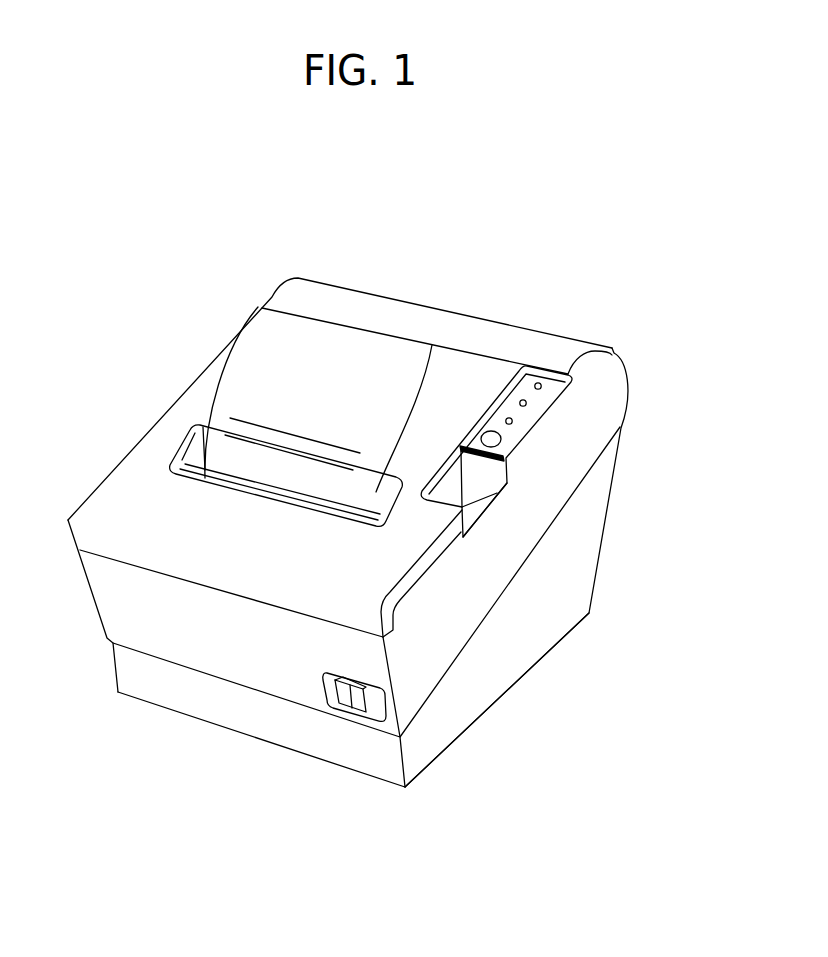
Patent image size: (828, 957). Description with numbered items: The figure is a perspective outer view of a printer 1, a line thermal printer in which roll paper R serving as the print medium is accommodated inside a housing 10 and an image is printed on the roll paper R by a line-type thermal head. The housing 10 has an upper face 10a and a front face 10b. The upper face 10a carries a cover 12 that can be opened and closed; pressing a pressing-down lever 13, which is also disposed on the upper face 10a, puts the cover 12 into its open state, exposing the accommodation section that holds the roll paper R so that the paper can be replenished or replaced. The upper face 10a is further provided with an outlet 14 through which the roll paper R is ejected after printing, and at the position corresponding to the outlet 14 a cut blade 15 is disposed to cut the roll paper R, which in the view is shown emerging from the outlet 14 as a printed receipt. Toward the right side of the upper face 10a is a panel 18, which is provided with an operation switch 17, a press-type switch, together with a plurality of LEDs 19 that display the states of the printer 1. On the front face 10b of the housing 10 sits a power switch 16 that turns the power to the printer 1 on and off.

The printer 1 is at (408, 214).
The housing 10 is at (608, 383).
The upper face 10a is at (353, 300).
The front face 10b is at (234, 655).
The cover 12 is at (460, 325).
The pressing-down lever 13 is at (463, 487).
The outlet 14 is at (203, 432).
The cut blade 15 is at (173, 468).
The power switch 16 is at (343, 697).
The operation switch 17 is at (500, 440).
The panel 18 is at (547, 362).
The LEDs 19 is at (512, 421).
The roll paper R is at (252, 350).